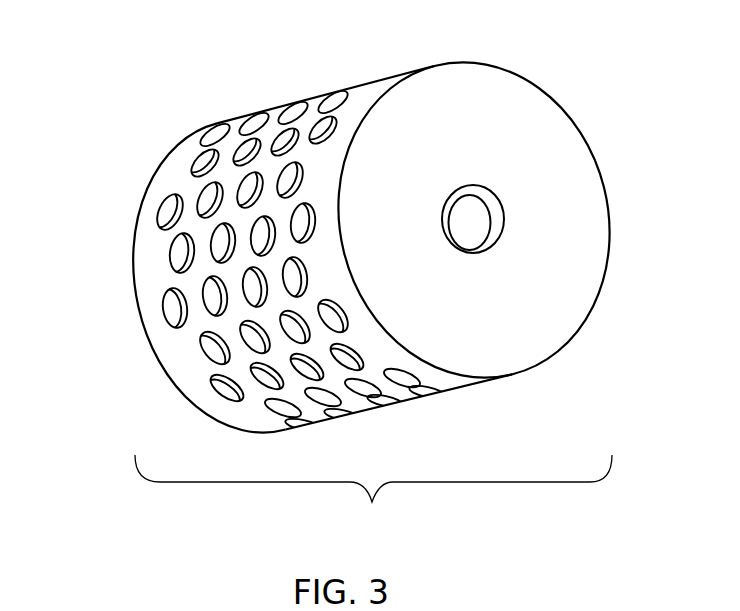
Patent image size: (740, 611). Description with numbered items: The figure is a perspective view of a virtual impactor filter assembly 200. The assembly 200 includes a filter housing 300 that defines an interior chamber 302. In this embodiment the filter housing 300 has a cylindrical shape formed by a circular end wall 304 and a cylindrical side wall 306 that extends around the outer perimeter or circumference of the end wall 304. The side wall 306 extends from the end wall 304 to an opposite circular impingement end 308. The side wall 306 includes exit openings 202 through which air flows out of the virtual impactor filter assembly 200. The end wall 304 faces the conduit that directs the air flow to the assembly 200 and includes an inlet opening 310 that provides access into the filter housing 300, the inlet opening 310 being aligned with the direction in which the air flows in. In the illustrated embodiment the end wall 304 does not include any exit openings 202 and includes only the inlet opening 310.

The virtual impactor filter assembly 200 is at (372, 502).
The exit openings 202 is at (323, 402).
The filter housing 300 is at (462, 58).
The interior chamber 302 is at (168, 277).
The circular end wall 304 is at (156, 349).
The cylindrical side wall 306 is at (299, 262).
The circular impingement end 308 is at (548, 112).
The inlet opening 310 is at (473, 233).